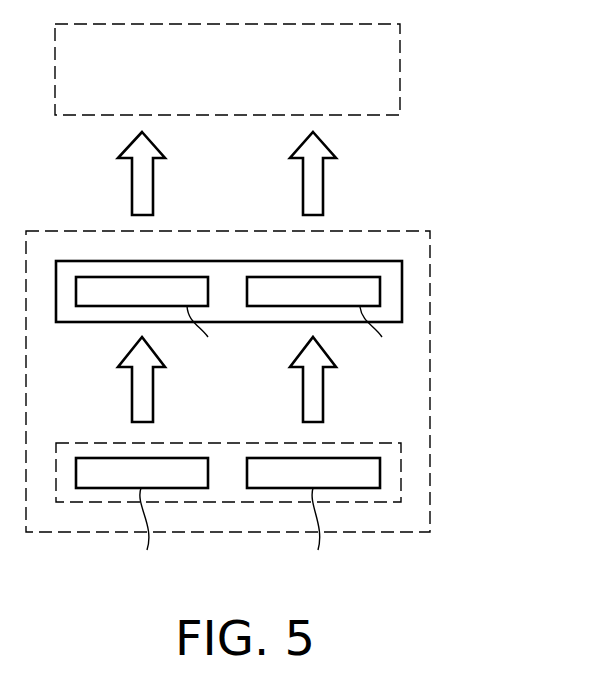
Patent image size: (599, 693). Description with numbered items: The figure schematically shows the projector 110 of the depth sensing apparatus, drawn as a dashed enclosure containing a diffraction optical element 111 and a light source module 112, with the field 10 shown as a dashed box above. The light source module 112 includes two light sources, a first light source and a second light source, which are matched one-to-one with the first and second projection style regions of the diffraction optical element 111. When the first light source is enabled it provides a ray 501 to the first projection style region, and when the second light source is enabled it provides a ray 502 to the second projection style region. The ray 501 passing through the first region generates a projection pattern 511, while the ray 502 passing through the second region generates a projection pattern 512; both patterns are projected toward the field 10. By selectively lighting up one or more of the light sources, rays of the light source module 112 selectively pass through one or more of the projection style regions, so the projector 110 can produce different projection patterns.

The field 10 is at (400, 48).
The projector 110 is at (430, 373).
The diffraction optical element 111 is at (402, 292).
The light source module 112 is at (400, 473).
The ray 501 is at (153, 395).
The ray 502 is at (323, 395).
The projection pattern 511 is at (153, 190).
The projection pattern 512 is at (323, 190).